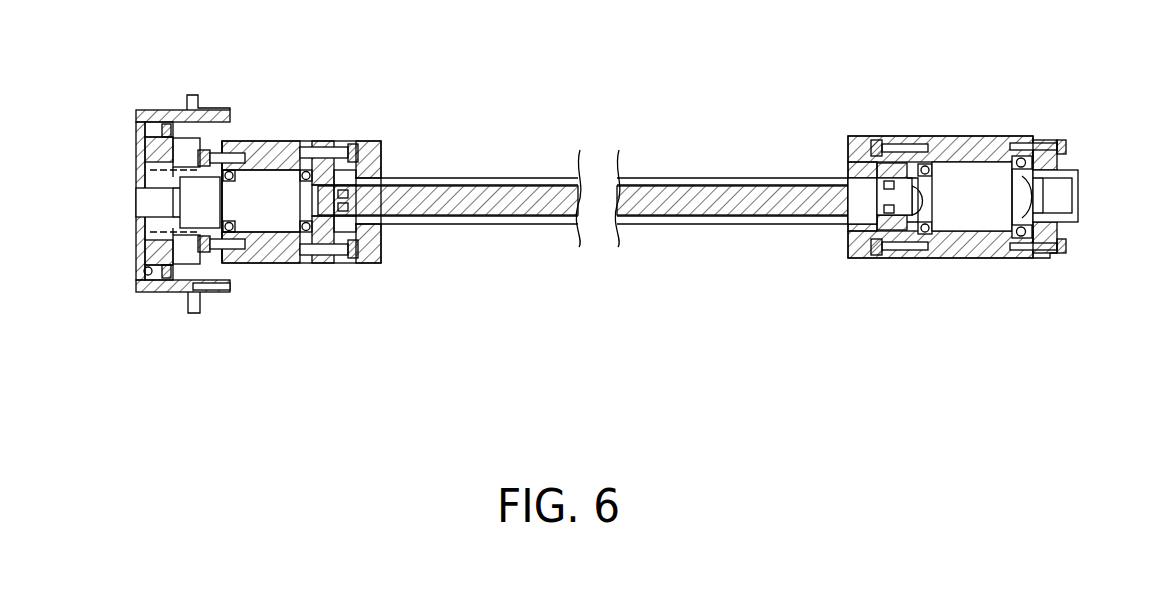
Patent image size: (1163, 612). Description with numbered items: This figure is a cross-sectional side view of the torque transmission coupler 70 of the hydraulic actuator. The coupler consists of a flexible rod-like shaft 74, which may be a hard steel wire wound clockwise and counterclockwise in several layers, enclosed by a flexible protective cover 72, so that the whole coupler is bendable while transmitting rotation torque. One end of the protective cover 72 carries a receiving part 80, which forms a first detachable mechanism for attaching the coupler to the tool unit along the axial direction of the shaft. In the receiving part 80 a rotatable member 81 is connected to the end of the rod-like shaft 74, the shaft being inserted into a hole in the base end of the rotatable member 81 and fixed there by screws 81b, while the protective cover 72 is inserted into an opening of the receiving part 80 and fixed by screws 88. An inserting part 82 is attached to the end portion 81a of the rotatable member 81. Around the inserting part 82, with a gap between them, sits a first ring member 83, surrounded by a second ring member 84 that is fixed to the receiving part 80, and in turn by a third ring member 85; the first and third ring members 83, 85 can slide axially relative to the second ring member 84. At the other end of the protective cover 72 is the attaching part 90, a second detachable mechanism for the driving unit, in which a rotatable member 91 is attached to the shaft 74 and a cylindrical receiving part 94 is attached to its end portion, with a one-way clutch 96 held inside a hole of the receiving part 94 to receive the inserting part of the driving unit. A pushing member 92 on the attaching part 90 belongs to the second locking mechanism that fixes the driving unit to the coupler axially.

The torque transmission coupler 70 is at (857, 83).
The protective cover 72 is at (468, 177).
The rod-like shaft 74 is at (497, 211).
The receiving part 80 is at (302, 140).
The rotatable member 81 is at (272, 213).
The end portion of the rotatable member 81a is at (212, 205).
The screws 81b is at (328, 142).
The inserting part 82 is at (150, 205).
The first ring member 83 is at (170, 293).
The second ring member 84 is at (217, 297).
The third ring member 85 is at (173, 110).
The screws 88 is at (368, 137).
The attaching part 90 is at (960, 136).
The rotatable member 91 is at (982, 207).
The pushing member 92 is at (1048, 262).
The cylindrical receiving part 94 is at (1073, 227).
The one-way clutch 96 is at (1060, 212).